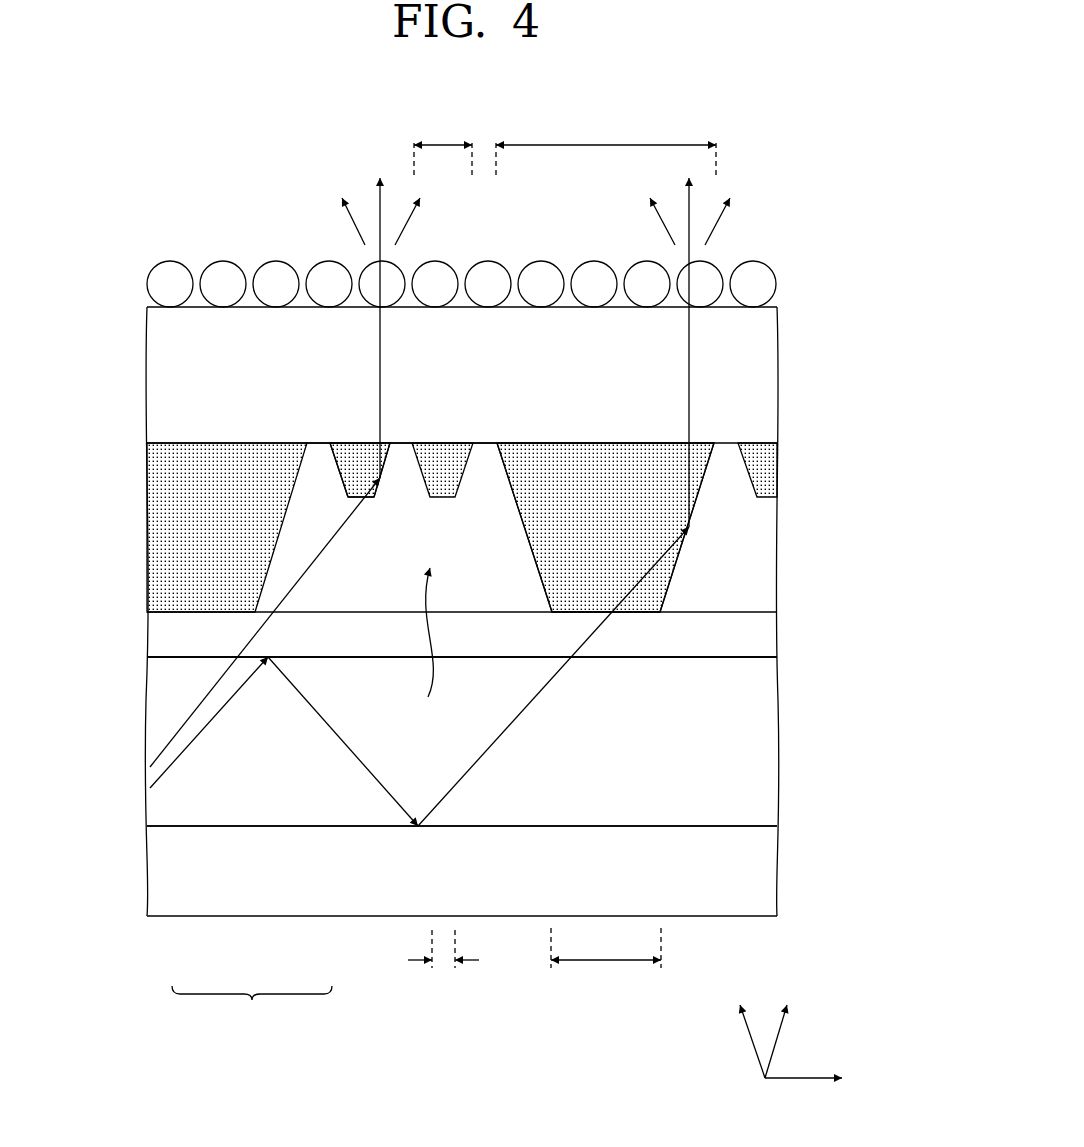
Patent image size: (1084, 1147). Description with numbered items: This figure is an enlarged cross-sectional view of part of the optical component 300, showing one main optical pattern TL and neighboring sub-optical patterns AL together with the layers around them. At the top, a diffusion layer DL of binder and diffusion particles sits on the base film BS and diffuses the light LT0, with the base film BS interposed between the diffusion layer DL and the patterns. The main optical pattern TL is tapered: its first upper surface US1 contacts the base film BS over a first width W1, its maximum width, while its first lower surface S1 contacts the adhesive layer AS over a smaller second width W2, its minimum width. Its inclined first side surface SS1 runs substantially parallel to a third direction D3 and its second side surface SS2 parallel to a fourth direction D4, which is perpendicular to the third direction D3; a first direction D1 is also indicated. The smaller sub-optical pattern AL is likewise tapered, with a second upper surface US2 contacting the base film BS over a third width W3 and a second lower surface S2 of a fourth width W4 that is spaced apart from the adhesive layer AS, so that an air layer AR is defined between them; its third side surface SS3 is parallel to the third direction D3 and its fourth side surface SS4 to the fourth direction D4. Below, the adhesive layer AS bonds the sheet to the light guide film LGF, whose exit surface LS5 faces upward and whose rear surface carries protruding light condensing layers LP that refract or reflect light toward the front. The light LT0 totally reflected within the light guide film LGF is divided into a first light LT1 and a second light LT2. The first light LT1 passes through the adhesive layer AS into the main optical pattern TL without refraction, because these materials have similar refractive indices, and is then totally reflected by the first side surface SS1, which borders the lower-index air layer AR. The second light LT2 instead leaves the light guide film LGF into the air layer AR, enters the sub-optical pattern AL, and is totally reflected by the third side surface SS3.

The optical component 300 is at (776, 170).
The diffusion layer DL is at (770, 283).
The base film BS is at (770, 372).
The main optical pattern TL is at (162, 531).
The sub-optical pattern AL is at (440, 460).
The first upper surface US1 is at (650, 443).
The second upper surface US2 is at (352, 443).
The first side surface SS1 is at (700, 490).
The second side surface SS2 is at (506, 490).
The third side surface SS3 is at (387, 465).
The fourth side surface SS4 is at (335, 465).
The first lower surface S1 is at (637, 614).
The second lower surface S2 is at (368, 502).
The adhesive layer AS is at (765, 629).
The exit surface LS5 is at (752, 657).
The light guide film LGF is at (770, 738).
The light condensing layer LP is at (770, 868).
The air layer AR is at (428, 646).
The light LT0 is at (252, 1005).
The first light LT1 is at (322, 720).
The second light LT2 is at (188, 718).
The first width W1 is at (606, 147).
The second width W2 is at (606, 959).
The third width W3 is at (443, 147).
The fourth width W4 is at (443, 962).
The first direction D1 is at (819, 1078).
The third direction D3 is at (784, 1029).
The fourth direction D4 is at (745, 1029).